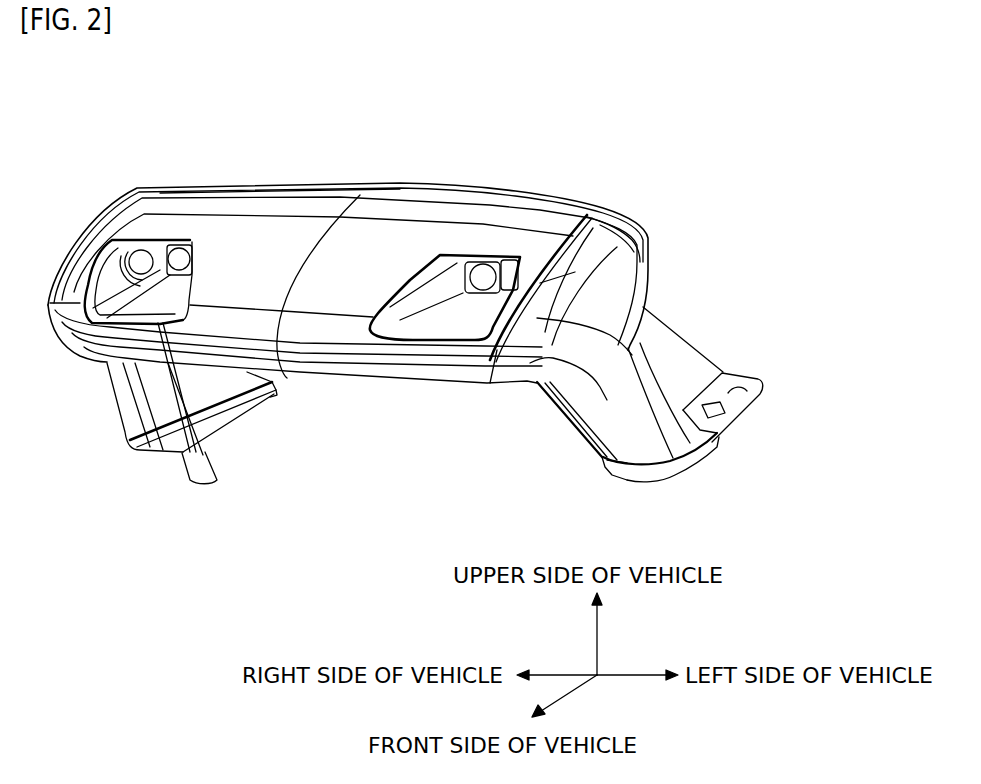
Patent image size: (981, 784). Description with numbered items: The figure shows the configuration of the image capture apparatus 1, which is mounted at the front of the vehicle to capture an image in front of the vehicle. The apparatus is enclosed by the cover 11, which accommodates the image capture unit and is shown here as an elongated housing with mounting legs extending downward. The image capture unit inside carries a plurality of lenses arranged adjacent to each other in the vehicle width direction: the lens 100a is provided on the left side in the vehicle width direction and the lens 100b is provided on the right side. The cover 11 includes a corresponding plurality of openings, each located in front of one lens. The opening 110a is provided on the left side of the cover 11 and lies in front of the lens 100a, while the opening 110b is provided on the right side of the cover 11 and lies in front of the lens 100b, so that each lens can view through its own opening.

The image capture apparatus 1 is at (405, 280).
The cover 11 is at (360, 193).
The lens 100a is at (480, 258).
The lens 100b is at (185, 245).
The opening 110a is at (510, 258).
The opening 110b is at (142, 240).